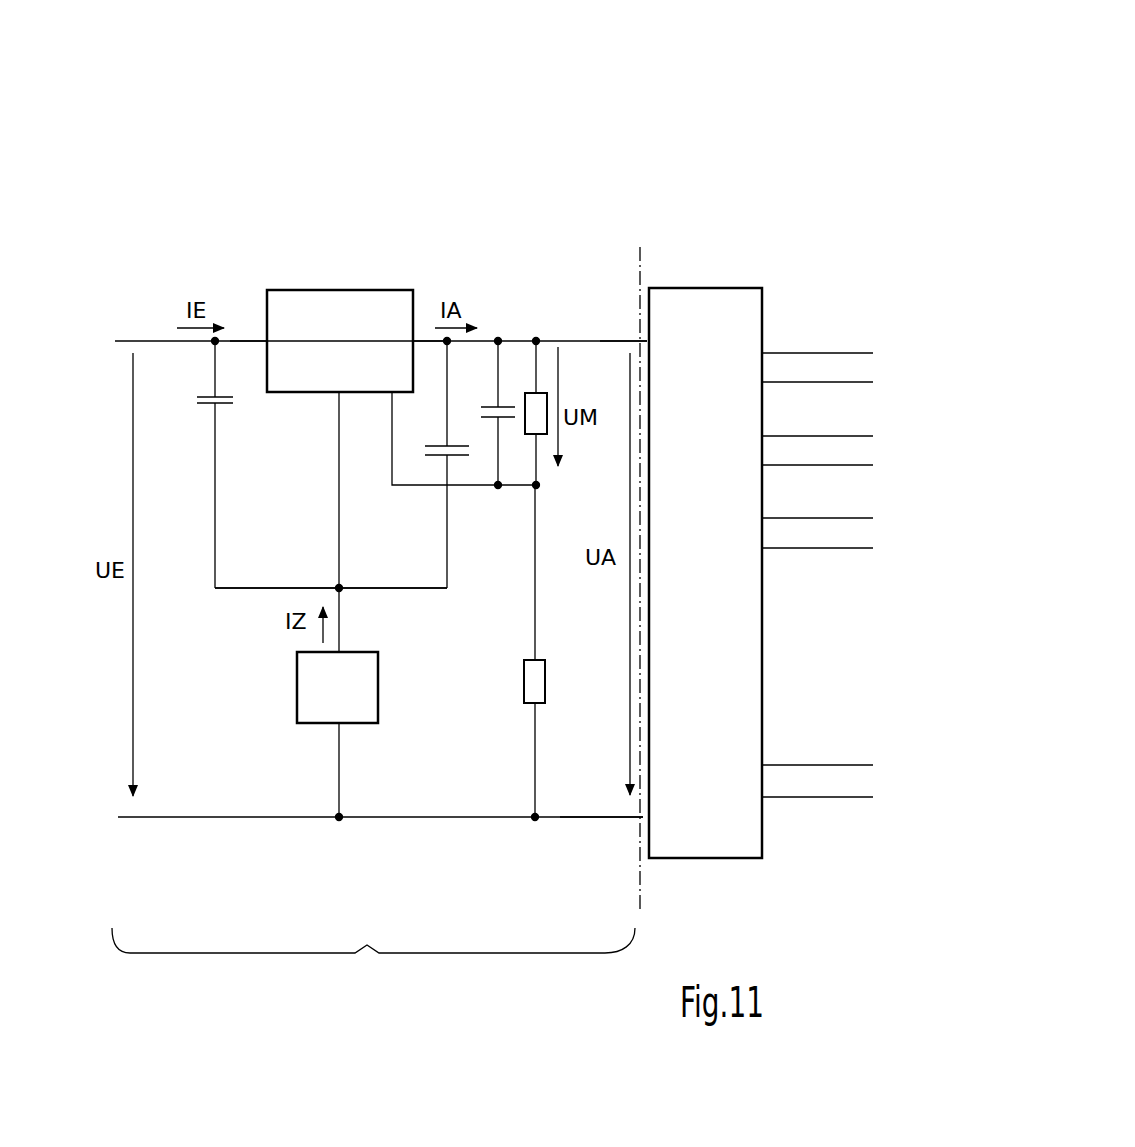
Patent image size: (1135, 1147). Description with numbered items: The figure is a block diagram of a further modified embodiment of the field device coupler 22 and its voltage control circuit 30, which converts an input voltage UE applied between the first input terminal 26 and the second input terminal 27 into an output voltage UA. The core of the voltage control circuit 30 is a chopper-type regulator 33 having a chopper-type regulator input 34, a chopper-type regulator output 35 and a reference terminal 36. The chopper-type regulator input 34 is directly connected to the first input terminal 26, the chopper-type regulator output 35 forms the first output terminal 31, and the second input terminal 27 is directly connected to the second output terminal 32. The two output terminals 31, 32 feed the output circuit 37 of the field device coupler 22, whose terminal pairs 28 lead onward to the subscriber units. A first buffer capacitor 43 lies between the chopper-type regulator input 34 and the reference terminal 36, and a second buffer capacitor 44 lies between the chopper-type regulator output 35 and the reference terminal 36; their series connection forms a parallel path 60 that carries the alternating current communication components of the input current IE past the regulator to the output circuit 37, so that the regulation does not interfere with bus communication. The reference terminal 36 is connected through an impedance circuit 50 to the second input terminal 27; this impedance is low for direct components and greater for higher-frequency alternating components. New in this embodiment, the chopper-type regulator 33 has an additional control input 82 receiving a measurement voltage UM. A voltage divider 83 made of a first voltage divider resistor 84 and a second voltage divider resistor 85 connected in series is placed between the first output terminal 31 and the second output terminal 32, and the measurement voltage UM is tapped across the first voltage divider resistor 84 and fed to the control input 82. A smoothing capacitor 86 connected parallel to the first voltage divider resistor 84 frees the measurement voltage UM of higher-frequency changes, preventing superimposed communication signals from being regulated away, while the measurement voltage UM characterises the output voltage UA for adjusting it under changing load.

The field device coupler 22 is at (753, 172).
The first input terminal 26 is at (158, 340).
The second input terminal 27 is at (158, 818).
The terminal pairs 28 is at (758, 340).
The voltage control circuit 30 is at (373, 960).
The first output terminal 31 is at (614, 341).
The second output terminal 32 is at (585, 818).
The chopper-type regulator 33 is at (340, 312).
The chopper-type regulator input 34 is at (267, 340).
The chopper-type regulator output 35 is at (413, 340).
The reference terminal 36 is at (339, 390).
The output circuit 37 is at (707, 303).
The first buffer capacitor 43 is at (200, 405).
The second buffer capacitor 44 is at (440, 447).
The impedance circuit 50 is at (373, 682).
The parallel path 60 is at (210, 602).
The control input 82 is at (392, 390).
The voltage divider 83 is at (569, 364).
The first voltage divider resistor 84 is at (536, 393).
The second voltage divider resistor 85 is at (540, 672).
The smoothing capacitor 86 is at (493, 406).